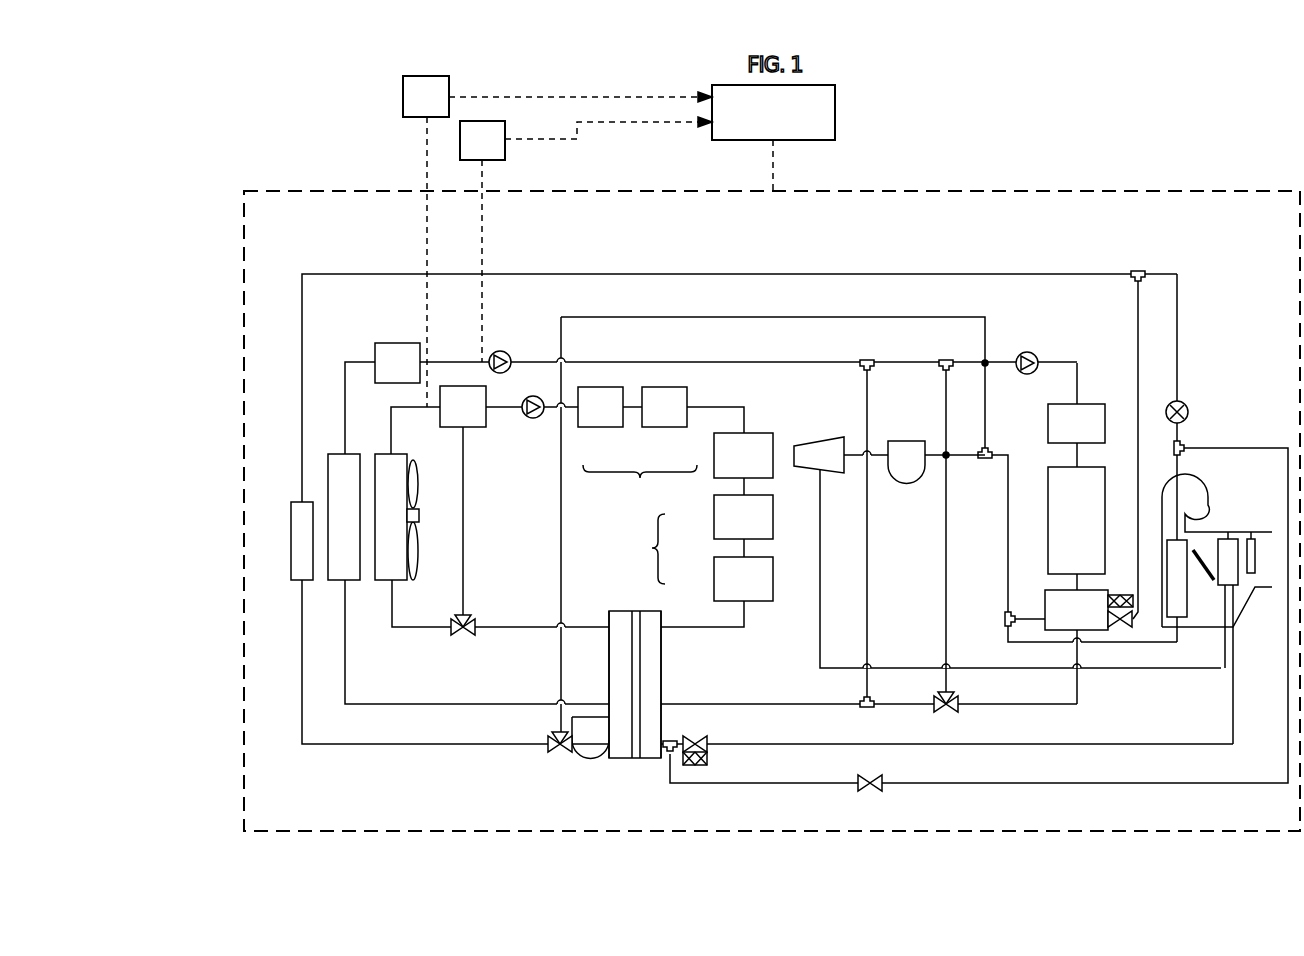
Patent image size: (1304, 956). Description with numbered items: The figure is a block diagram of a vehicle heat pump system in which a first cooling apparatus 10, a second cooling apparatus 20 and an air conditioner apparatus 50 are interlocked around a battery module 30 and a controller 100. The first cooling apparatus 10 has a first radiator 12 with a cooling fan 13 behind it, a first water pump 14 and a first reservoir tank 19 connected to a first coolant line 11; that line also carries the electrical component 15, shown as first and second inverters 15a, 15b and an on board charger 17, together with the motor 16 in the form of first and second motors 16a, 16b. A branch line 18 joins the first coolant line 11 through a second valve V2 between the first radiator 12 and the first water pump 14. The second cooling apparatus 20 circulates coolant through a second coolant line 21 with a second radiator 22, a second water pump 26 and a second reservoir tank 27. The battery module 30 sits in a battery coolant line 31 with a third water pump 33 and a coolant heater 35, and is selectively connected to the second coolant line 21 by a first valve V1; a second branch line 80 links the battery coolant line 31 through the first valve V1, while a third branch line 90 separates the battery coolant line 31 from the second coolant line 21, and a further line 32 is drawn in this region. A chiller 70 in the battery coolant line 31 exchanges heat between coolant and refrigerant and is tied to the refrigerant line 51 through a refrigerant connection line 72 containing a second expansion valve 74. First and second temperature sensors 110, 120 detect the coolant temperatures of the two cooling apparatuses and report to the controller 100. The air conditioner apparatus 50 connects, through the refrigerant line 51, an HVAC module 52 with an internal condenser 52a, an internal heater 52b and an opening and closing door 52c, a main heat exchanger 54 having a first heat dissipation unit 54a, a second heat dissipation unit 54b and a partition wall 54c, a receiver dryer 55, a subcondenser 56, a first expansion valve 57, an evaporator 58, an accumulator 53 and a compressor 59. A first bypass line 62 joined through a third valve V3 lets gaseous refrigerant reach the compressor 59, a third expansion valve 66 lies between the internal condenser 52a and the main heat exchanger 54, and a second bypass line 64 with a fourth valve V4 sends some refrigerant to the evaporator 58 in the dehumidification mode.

The controller 100 is at (835, 112).
The first temperature sensor 110 is at (403, 97).
The second temperature sensor 120 is at (505, 150).
The first cooling apparatus 10 is at (395, 639).
The second cooling apparatus 20 is at (332, 612).
The first coolant line 11 is at (433, 627).
The first radiator 12 is at (383, 454).
The cooling fan 13 is at (419, 516).
The first water pump 14 is at (533, 418).
The electrical component 15 is at (640, 483).
The first inverter 15a is at (601, 427).
The second inverter 15b is at (656, 427).
The motor 16 is at (647, 549).
The first motor 16a is at (714, 518).
The second motor 16b is at (714, 580).
The on board charger 17 is at (714, 460).
The branch line 18 is at (463, 520).
The first reservoir tank 19 is at (449, 427).
The second coolant line 21 is at (360, 362).
The second radiator 22 is at (336, 454).
The second water pump 26 is at (500, 351).
The second reservoir tank 27 is at (398, 343).
The battery module 30 is at (1048, 520).
The battery coolant line 31 is at (1077, 389).
The branch line 32 is at (1138, 333).
The third water pump 33 is at (1027, 352).
The coolant heater 35 is at (1048, 428).
The air conditioner apparatus 50 is at (1168, 266).
The refrigerant line 51 is at (652, 273).
The HVAC module 52 is at (1222, 494).
The internal condenser 52a is at (1228, 586).
The internal heater 52b is at (1263, 539).
The opening and closing door 52c is at (1209, 582).
The accumulator 53 is at (906, 484).
The main heat exchanger 54 is at (669, 660).
The first heat dissipation unit 54a is at (622, 611).
The second heat dissipation unit 54b is at (656, 758).
The partition wall 54c is at (634, 758).
The receiver dryer 55 is at (590, 760).
The subcondenser 56 is at (291, 543).
The first expansion valve 57 is at (1188, 412).
The evaporator 58 is at (1167, 553).
The compressor 59 is at (816, 443).
The first bypass line 62 is at (752, 317).
The second bypass line 64 is at (1140, 784).
The third expansion valve 66 is at (708, 760).
The chiller 70 is at (1045, 592).
The refrigerant connection line 72 is at (1027, 619).
The second expansion valve 74 is at (1122, 595).
The second branch line 80 is at (946, 412).
The third branch line 90 is at (867, 412).
The first valve V1 is at (948, 712).
The second valve V2 is at (461, 638).
The third valve V3 is at (556, 756).
The fourth valve V4 is at (870, 792).